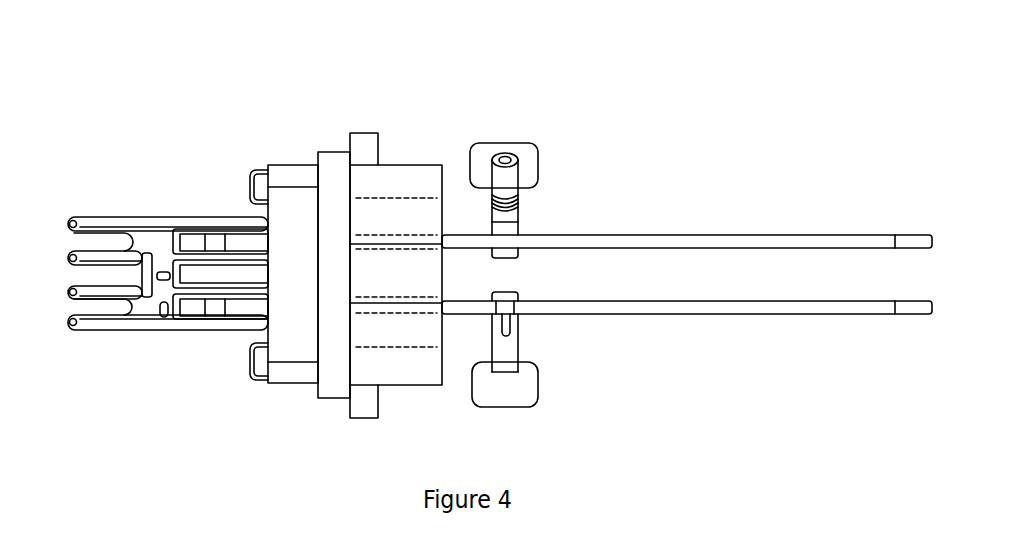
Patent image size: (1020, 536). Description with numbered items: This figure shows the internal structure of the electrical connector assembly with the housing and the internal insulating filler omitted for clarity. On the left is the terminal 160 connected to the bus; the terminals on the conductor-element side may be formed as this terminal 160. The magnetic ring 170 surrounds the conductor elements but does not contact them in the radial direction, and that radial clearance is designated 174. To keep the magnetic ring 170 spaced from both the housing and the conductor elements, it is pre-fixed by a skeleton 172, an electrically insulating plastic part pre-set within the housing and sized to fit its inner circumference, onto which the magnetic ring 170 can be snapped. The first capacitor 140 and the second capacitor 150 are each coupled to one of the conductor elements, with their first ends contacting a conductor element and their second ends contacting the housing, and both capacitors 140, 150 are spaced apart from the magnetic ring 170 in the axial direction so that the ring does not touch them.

The first capacitor 140 is at (517, 143).
The second capacitor 150 is at (538, 370).
The terminal 160 is at (225, 217).
The magnetic ring 170 is at (412, 165).
The skeleton 172 is at (342, 151).
The radial clearance 174 is at (390, 215).